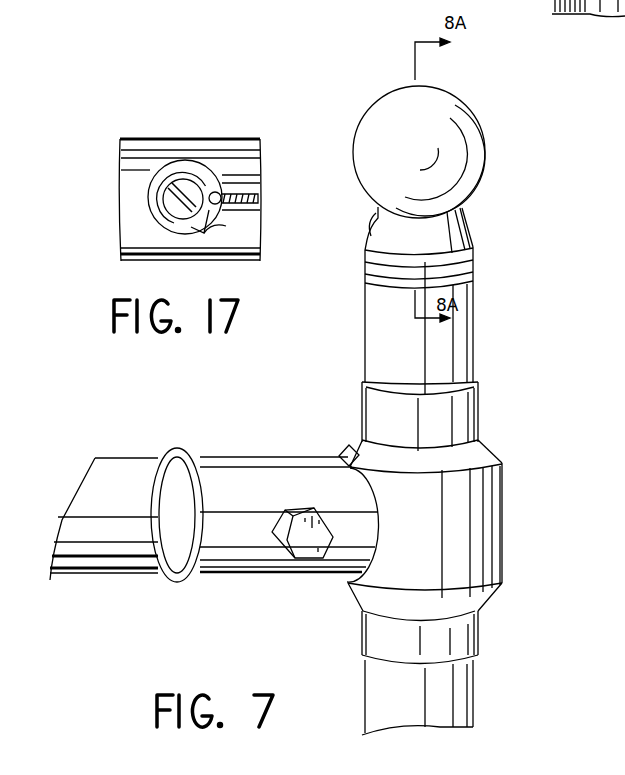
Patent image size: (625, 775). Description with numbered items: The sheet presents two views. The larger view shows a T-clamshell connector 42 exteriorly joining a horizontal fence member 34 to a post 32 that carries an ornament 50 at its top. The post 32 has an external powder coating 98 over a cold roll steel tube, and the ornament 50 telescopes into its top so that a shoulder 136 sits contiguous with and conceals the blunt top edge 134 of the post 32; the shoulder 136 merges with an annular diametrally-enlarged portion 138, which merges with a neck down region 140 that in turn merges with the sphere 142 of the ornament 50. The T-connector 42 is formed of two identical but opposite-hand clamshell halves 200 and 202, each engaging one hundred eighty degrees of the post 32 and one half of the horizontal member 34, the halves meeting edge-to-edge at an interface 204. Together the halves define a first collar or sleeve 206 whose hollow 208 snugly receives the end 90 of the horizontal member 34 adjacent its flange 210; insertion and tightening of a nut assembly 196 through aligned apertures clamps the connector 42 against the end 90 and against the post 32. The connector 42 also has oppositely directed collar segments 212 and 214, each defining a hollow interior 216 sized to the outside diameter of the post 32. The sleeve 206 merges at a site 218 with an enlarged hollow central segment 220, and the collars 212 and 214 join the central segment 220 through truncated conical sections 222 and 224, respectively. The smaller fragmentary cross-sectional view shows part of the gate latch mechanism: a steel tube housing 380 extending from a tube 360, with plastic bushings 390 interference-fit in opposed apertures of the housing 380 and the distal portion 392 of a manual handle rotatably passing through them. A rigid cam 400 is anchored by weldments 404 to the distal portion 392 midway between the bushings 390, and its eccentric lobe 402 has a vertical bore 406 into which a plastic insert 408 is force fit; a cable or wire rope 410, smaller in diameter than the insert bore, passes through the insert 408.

In FIG. 17, the external powder coating 98 is at (172, 139).
In FIG. 7, the external powder coating 98 is at (416, 346).
In FIG. 17, the weldments 404 is at (208, 166).
In FIG. 17, the steel tube housing 380 is at (135, 157).
In FIG. 17, the rigid cam 400 is at (150, 182).
In FIG. 17, the plastic bushings 390 is at (150, 210).
In FIG. 17, the distal portion 392 is at (170, 256).
In FIG. 17, the eccentric lobe 402 is at (246, 172).
In FIG. 17, the vertical bore 406 is at (238, 184).
In FIG. 17, the cable or wire rope 410 is at (258, 200).
In FIG. 17, the plastic insert 408 is at (230, 226).
In FIG. 7, the tube 360 is at (583, 16).
In FIG. 7, the ornament 50 is at (482, 100).
In FIG. 7, the sphere 142 is at (421, 146).
In FIG. 7, the neck down region 140 is at (462, 214).
In FIG. 7, the blunt top edge 134 is at (368, 222).
In FIG. 7, the annular diametrally-enlarged portion 138 is at (473, 250).
In FIG. 7, the shoulder 136 is at (365, 262).
In FIG. 7, the post 32 is at (488, 347).
In FIG. 7, the hollow interior 216 is at (437, 397).
In FIG. 7, the collar segment 212 is at (418, 423).
In FIG. 7, the clamshell half 200 is at (350, 422).
In FIG. 7, the interface 204 is at (340, 450).
In FIG. 7, the truncated conical section 222 is at (445, 466).
In FIG. 7, the clamshell half 202 is at (508, 470).
In FIG. 7, the site 218 is at (378, 525).
In FIG. 7, the T-connector 42 is at (512, 541).
In FIG. 7, the enlarged hollow central segment 220 is at (437, 563).
In FIG. 7, the truncated conical section 224 is at (435, 615).
In FIG. 7, the collar segment 214 is at (415, 651).
In FIG. 7, the horizontal member 34 is at (132, 445).
In FIG. 7, the hollow 208 is at (172, 480).
In FIG. 7, the first collar 206 is at (228, 553).
In FIG. 7, the flange 210 is at (200, 525).
In FIG. 7, the end 90 is at (155, 550).
In FIG. 7, the nut assembly 196 is at (297, 495).